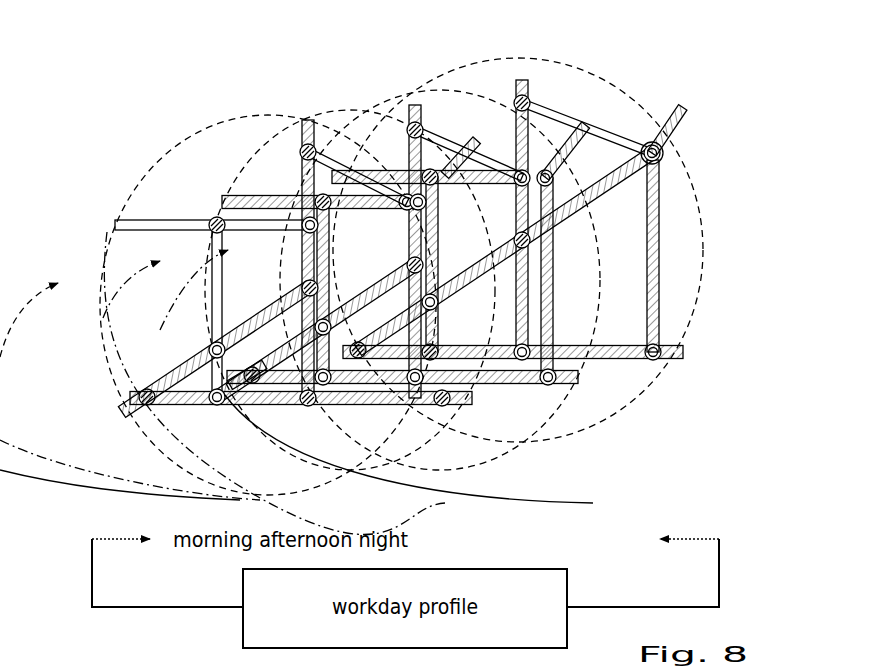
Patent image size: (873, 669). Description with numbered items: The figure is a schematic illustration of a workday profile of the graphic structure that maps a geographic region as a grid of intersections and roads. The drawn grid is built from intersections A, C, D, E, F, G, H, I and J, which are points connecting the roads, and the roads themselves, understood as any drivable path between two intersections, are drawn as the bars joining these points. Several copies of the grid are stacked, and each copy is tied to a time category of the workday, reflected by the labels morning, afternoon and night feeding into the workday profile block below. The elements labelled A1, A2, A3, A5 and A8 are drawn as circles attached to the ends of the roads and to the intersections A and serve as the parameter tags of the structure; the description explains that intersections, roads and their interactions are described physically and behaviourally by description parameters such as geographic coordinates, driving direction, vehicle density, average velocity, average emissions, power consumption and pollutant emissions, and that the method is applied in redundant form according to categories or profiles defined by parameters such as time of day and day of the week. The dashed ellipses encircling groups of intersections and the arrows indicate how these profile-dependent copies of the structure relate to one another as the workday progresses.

The intersection A is at (330, 178).
The actuator A1 is at (479, 137).
The actuator A2 is at (116, 416).
The actuator A3 is at (220, 203).
The actuator A5 is at (113, 225).
The actuator A8 is at (685, 352).
The joint C is at (207, 307).
The joint D is at (386, 297).
The joint E is at (405, 258).
The joint F is at (422, 201).
The joint G is at (480, 381).
The joint H is at (648, 235).
The joint I is at (472, 144).
The joint J is at (580, 377).